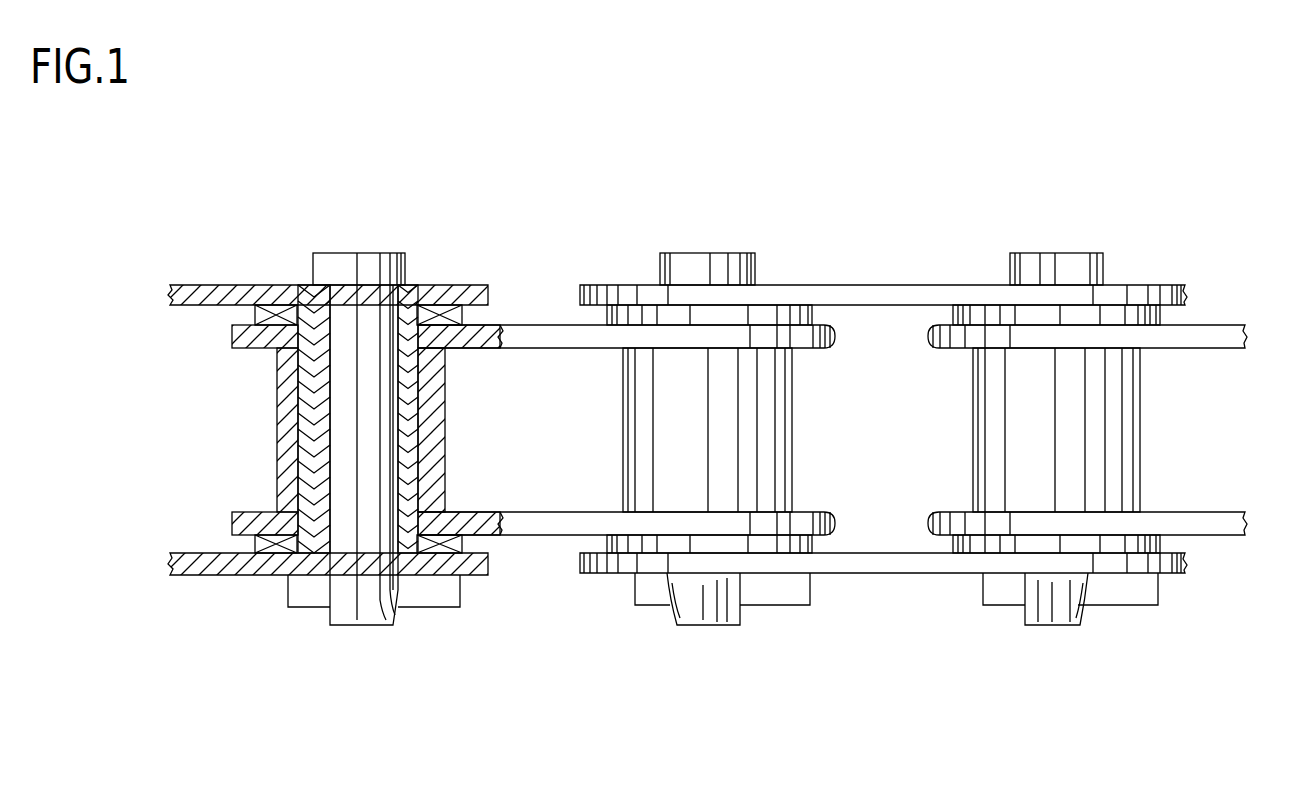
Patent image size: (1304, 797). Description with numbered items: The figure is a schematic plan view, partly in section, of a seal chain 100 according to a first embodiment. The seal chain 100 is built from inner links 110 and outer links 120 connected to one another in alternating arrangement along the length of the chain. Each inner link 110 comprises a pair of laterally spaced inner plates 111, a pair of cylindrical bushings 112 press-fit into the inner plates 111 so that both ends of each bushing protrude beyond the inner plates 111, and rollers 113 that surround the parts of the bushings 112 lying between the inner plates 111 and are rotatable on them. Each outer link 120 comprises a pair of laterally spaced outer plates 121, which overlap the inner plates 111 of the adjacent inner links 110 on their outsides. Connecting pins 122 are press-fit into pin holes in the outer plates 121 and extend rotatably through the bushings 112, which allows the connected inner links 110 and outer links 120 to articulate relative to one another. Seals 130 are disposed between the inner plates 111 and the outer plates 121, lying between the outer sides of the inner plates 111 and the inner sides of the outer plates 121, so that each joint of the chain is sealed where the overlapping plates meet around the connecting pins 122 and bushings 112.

The seal chain 100 is at (671, 203).
The inner link 110 is at (557, 553).
The inner plate 111 is at (540, 325).
The bushing 112 is at (298, 456).
The roller 113 is at (780, 455).
The outer link 120 is at (991, 274).
The outer plate 121 is at (232, 284).
The connecting pin 122 is at (368, 258).
The seal 130 is at (830, 318).